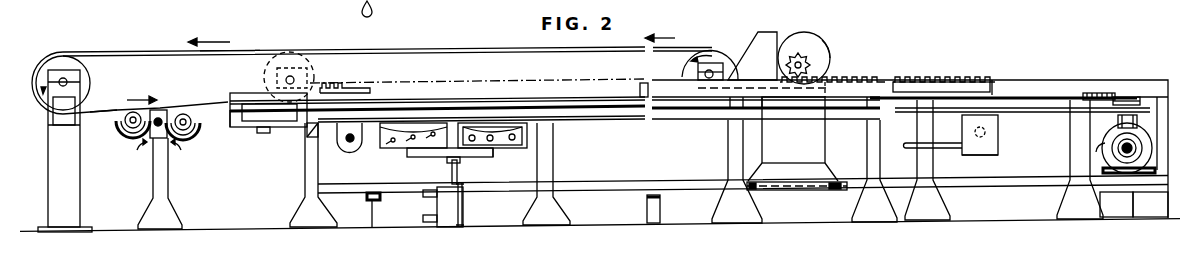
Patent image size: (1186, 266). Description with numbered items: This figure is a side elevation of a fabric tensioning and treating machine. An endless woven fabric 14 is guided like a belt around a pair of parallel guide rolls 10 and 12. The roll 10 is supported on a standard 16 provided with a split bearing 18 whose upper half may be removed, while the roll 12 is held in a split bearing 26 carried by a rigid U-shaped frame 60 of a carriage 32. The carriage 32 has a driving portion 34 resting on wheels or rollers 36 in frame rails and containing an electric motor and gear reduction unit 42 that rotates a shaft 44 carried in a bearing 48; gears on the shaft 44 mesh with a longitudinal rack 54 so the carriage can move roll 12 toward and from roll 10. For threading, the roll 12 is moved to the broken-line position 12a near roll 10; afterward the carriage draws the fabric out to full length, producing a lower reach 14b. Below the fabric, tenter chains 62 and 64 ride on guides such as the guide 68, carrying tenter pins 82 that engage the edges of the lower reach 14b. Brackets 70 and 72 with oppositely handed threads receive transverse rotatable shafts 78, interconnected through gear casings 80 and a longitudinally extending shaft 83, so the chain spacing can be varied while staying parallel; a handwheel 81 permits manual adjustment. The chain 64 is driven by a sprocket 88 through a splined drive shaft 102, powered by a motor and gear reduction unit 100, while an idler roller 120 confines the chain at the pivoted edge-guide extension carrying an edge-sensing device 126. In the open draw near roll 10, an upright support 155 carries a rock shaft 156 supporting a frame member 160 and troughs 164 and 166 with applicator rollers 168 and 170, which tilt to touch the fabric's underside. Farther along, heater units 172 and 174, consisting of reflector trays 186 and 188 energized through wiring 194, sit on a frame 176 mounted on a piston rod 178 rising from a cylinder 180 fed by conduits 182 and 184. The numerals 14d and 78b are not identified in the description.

The guide roll 10 is at (50, 62).
The guide roll 12 is at (683, 78).
The roll position in broken lines 12a is at (284, 62).
The endless woven fabric 14 is at (123, 45).
The lower reach 14b is at (108, 111).
The belt upper run 14d is at (233, 48).
The standard 16 is at (52, 145).
The bearing 18 is at (67, 78).
The split bearing 26 is at (716, 63).
The carriage 32 is at (782, 34).
The driving portion 34 is at (808, 143).
The wheels or rollers 36 is at (832, 191).
The electric motor and gear reduction unit 42 is at (822, 41).
The shaft 44 is at (810, 60).
The bearing 48 is at (803, 66).
The rack 54 is at (886, 79).
The U-shaped frame 60 is at (780, 32).
The tenter chain 62 is at (300, 117).
The tenter chain 64 is at (1100, 93).
The guide 68 is at (1058, 113).
The bracket 70 is at (345, 150).
The bracket 72 is at (1000, 150).
The rotatable shaft 78 is at (353, 146).
The pivot 78b is at (983, 128).
The gear casing 80 is at (978, 157).
The handwheel 81 is at (348, 2).
The tenter pin 82 is at (245, 103).
The longitudinally extending shaft 83 is at (912, 148).
The sprocket 88 is at (1131, 100).
The motor and gear reduction unit 100 is at (1121, 162).
The splined drive shaft 102 is at (1131, 157).
The idler roller 120 is at (352, 108).
The edge-sensing device 126 is at (236, 113).
The upright support 155 is at (168, 178).
The rock shaft 156 is at (159, 118).
The frame member 160 is at (153, 138).
The trough 164 is at (126, 137).
The trough 166 is at (196, 136).
The applicator roller 168 is at (133, 117).
The applicator roller 170 is at (186, 119).
The heater unit 172 is at (400, 149).
The heater unit 174 is at (517, 149).
The frame 176 is at (491, 160).
The piston rod 178 is at (457, 176).
The cylinder 180 is at (463, 226).
The conduit 182 is at (430, 223).
The conduit 184 is at (437, 195).
The reflector or enclosure tray 186 is at (447, 126).
The reflector or enclosure tray 188 is at (530, 122).
The wiring 194 is at (418, 2).